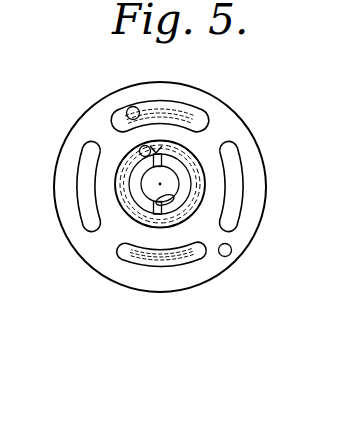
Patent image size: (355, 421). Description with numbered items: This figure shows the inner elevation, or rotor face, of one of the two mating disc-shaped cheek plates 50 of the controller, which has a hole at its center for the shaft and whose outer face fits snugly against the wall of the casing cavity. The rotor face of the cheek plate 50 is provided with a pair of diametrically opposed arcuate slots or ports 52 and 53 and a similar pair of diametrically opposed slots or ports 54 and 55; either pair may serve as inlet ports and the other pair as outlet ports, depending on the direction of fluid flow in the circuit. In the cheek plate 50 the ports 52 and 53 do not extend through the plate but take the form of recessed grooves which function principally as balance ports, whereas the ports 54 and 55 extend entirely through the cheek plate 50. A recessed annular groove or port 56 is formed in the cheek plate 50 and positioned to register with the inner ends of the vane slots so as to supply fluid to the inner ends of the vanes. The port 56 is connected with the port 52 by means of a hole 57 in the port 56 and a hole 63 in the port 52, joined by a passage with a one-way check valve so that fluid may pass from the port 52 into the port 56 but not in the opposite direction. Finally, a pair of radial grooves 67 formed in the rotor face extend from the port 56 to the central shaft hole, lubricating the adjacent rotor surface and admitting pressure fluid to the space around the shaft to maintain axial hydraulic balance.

The cheek plate 50 is at (236, 128).
The arcuate slot or port 52 is at (186, 107).
The arcuate slot or port 53 is at (150, 266).
The slot or port 54 is at (239, 180).
The slot or port 55 is at (85, 200).
The recessed annular groove or port 56 is at (138, 212).
The hole 57 is at (150, 147).
The hole 63 is at (133, 107).
The radial groove 67 is at (162, 146).